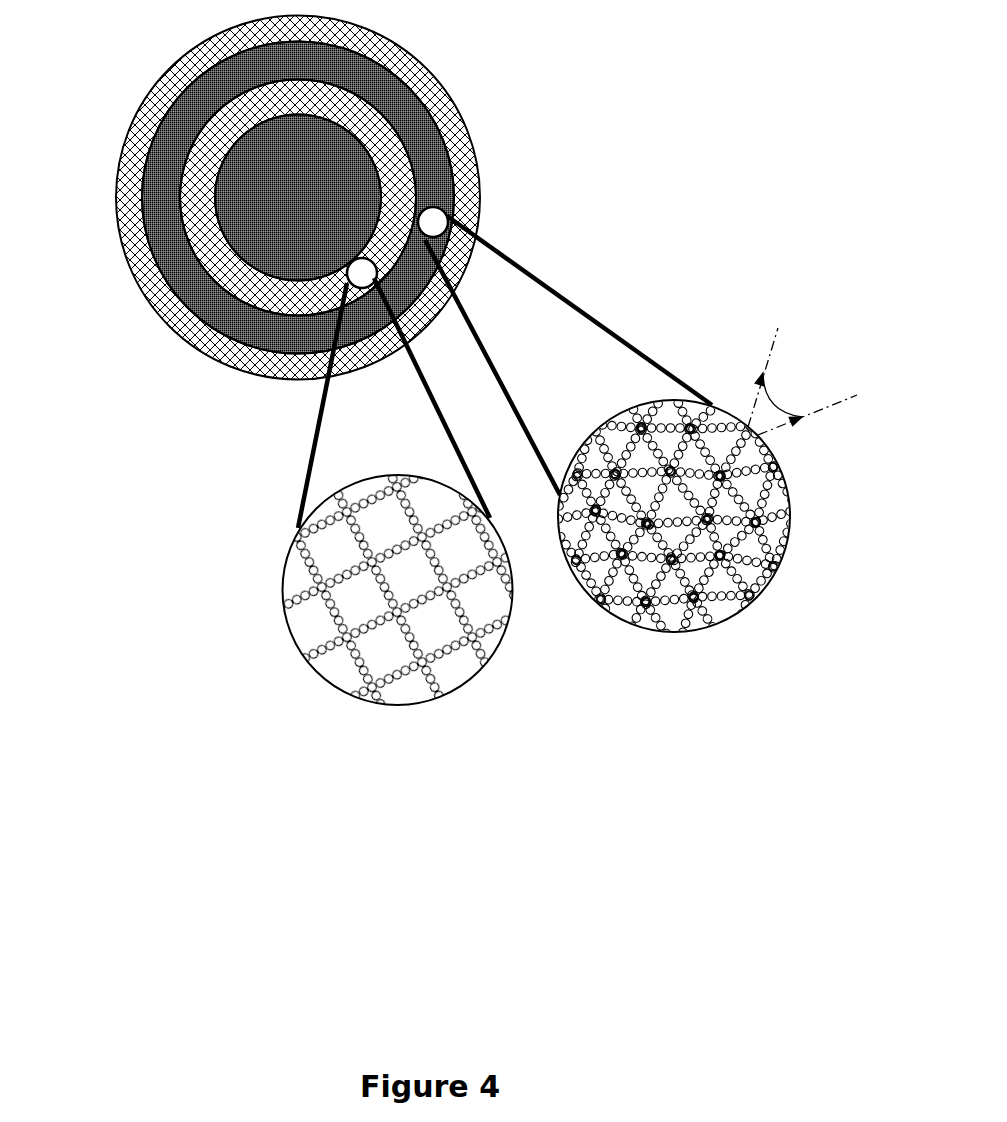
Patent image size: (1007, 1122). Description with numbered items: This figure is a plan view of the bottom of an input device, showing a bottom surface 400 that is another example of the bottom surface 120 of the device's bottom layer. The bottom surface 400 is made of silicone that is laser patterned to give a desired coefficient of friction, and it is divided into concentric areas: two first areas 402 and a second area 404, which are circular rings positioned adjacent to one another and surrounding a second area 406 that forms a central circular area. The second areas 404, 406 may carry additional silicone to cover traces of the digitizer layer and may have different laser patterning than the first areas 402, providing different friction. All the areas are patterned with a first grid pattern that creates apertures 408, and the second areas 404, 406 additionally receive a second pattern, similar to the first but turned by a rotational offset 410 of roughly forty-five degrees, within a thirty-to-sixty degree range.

The bottom surface 120 is at (265, 198).
The bottom surface 400 is at (265, 198).
The first area 402 is at (193, 180).
The second area 404 is at (167, 257).
The second area 406 is at (243, 230).
The aperture 408 is at (318, 647).
The rotational offset 410 is at (775, 404).